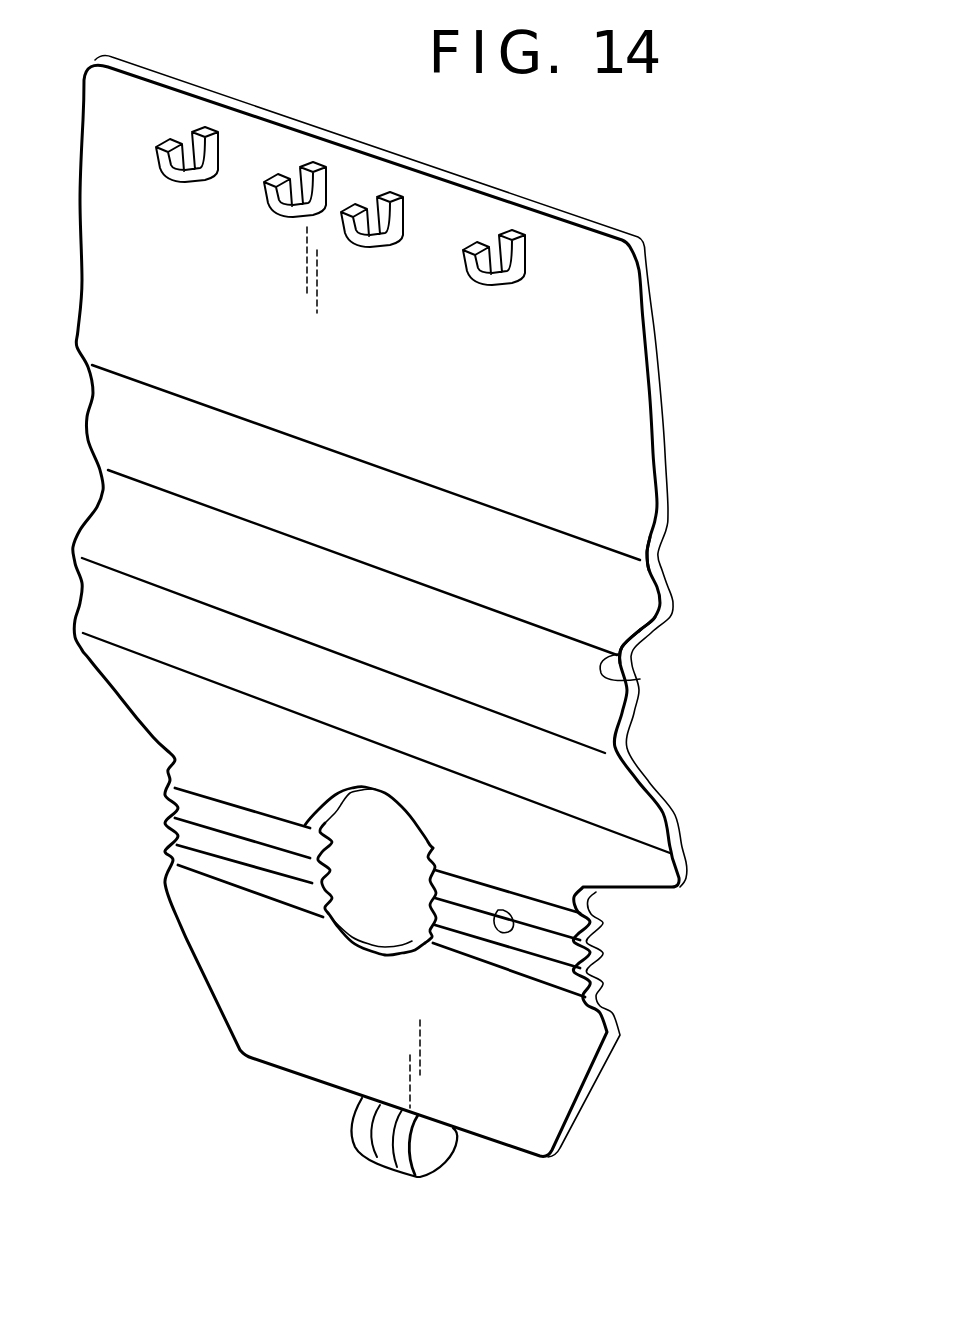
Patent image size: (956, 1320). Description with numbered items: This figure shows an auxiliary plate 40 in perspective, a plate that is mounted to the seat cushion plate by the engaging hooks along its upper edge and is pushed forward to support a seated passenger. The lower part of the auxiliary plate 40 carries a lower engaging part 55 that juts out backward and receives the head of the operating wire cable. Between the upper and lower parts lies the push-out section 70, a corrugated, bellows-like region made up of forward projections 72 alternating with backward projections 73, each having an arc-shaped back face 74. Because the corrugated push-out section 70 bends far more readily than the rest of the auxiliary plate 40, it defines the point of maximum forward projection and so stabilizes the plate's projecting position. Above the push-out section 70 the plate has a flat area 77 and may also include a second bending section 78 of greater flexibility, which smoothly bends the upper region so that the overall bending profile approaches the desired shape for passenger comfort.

The auxiliary plate 40 is at (417, 610).
The lower engaging part 55 is at (428, 1153).
The push-out section 70 is at (612, 947).
The forward projections 72 is at (663, 615).
The backward projections 73 is at (637, 679).
The back face 74 is at (570, 580).
The flat area 77 is at (612, 368).
The second bending section 78 is at (688, 582).